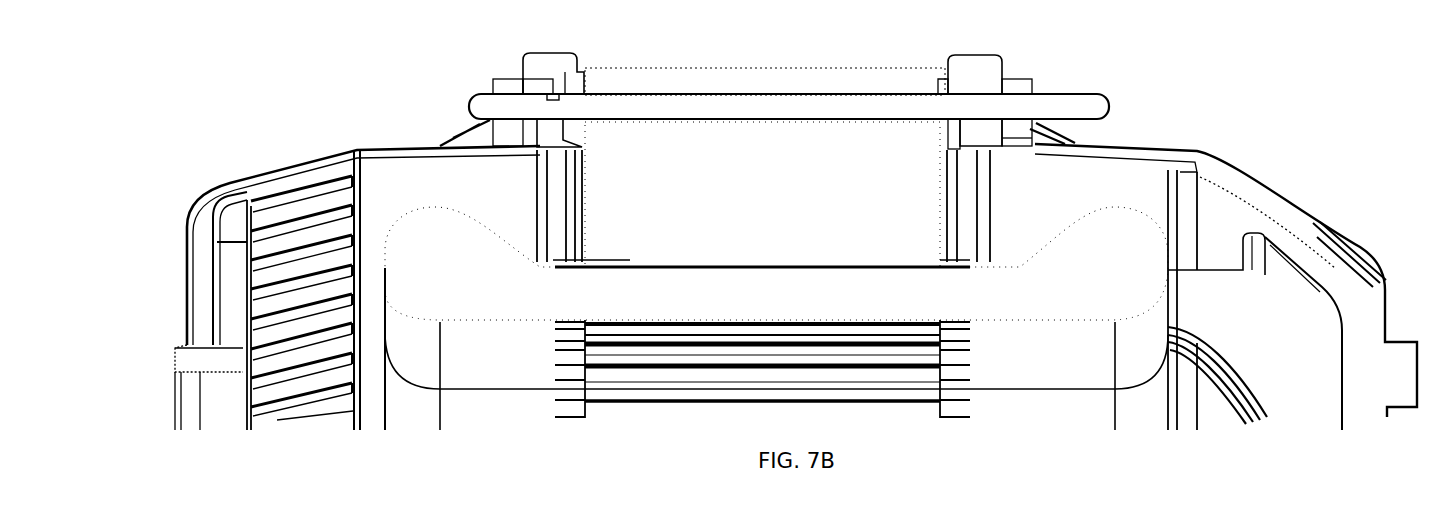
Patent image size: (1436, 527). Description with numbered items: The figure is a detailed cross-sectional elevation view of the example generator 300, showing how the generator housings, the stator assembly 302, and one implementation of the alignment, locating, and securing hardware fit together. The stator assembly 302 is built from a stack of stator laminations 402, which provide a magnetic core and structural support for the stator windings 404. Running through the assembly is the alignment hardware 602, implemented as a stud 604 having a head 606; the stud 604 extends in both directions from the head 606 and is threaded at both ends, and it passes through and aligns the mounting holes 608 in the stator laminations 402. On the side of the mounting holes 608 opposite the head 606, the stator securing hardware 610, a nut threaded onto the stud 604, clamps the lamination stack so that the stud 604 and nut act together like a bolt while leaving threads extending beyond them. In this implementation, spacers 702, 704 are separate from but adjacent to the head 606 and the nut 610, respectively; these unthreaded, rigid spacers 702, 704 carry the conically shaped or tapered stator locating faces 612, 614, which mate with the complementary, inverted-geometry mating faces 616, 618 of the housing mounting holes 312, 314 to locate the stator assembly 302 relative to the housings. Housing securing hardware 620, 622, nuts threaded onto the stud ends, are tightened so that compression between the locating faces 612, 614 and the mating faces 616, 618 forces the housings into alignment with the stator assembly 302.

The generator 300 is at (272, 90).
The stator assembly 302 is at (582, 34).
The mounting hole 312 is at (538, 130).
The mounting hole 314 is at (989, 127).
The stator laminations 402 is at (745, 165).
The stator windings 404 is at (445, 230).
The alignment hardware 602 is at (442, 90).
The stud 604 is at (767, 94).
The head 606 is at (580, 92).
The mounting holes 608 is at (805, 128).
The stator securing hardware 610 is at (948, 78).
The stator locating face 612 is at (554, 93).
The stator locating face 614 is at (962, 94).
The mating face 616 is at (552, 83).
The mating face 618 is at (966, 82).
The housing securing hardware 620 is at (500, 80).
The housing securing hardware 622 is at (1032, 78).
The spacer 702 is at (578, 150).
The spacer 704 is at (955, 125).